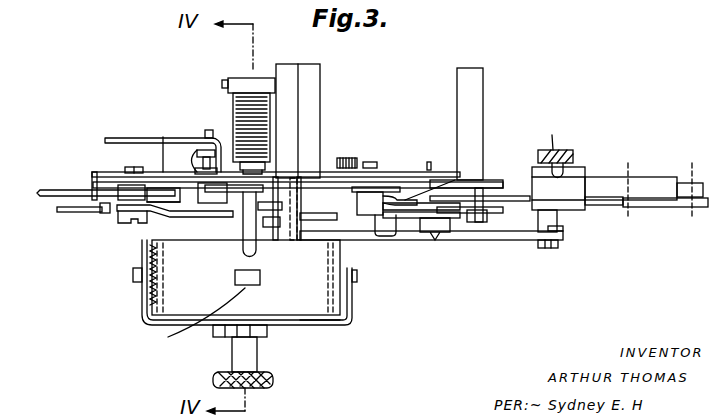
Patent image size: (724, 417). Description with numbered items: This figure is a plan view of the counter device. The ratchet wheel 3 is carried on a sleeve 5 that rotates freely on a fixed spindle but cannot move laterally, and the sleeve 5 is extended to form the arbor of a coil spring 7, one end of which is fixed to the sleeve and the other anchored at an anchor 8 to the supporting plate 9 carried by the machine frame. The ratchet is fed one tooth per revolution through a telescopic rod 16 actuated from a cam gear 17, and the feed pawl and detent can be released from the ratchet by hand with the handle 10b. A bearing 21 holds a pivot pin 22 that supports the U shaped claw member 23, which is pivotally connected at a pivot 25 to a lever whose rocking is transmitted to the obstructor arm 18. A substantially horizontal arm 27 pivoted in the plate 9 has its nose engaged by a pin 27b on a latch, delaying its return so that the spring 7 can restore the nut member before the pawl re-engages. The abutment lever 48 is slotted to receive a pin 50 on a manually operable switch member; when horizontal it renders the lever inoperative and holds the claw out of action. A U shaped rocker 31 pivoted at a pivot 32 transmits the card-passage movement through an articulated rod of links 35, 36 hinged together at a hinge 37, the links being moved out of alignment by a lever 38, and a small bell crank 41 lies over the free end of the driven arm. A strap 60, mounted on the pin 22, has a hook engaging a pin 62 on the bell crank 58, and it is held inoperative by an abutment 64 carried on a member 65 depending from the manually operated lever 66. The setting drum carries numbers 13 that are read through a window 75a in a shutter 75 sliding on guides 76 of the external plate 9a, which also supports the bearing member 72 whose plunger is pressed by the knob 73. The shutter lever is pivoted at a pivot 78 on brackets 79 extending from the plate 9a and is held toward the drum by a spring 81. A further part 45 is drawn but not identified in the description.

The sleeve 5 is at (258, 90).
The coil spring 7 is at (262, 115).
The anchor 8 is at (264, 158).
The ratchet wheel 3 is at (263, 178).
The strap 60 is at (335, 160).
The abutment 64 is at (382, 133).
The member 65 is at (400, 185).
The manually operated lever 66 is at (347, 183).
The pin 62 is at (430, 162).
The bell crank 58 is at (430, 188).
The supporting plate 9 is at (482, 185).
The telescopic rod 16 is at (508, 198).
The U shaped rocker 31 is at (572, 181).
The cam gear 17 is at (630, 185).
The pin 50 is at (63, 193).
The pivot 25 is at (127, 189).
The obstructor arm 18 is at (162, 202).
The abutment lever 48 is at (155, 178).
The U shaped claw member 23 is at (165, 137).
The bearing 21 is at (200, 150).
The pivot pin 22 is at (207, 132).
The pin 27b is at (103, 212).
The bracket 45 is at (173, 217).
The horizontal arm 27 is at (197, 210).
The small bell crank 41 is at (325, 213).
The handle 10b is at (248, 255).
The link 35 is at (357, 228).
The lever 38 is at (384, 234).
The hinge 37 is at (422, 240).
The link 36 is at (502, 240).
The pivot 32 is at (547, 248).
The pivot 78 is at (133, 272).
The shutter 75 is at (246, 277).
The numbers 13 is at (235, 280).
The spring 81 is at (143, 290).
The window 75a is at (191, 320).
The bearing member 72 is at (217, 328).
The knob 73 is at (253, 372).
The external plate 9a is at (308, 333).
The brackets 79 is at (353, 298).
The guides 76 is at (350, 318).